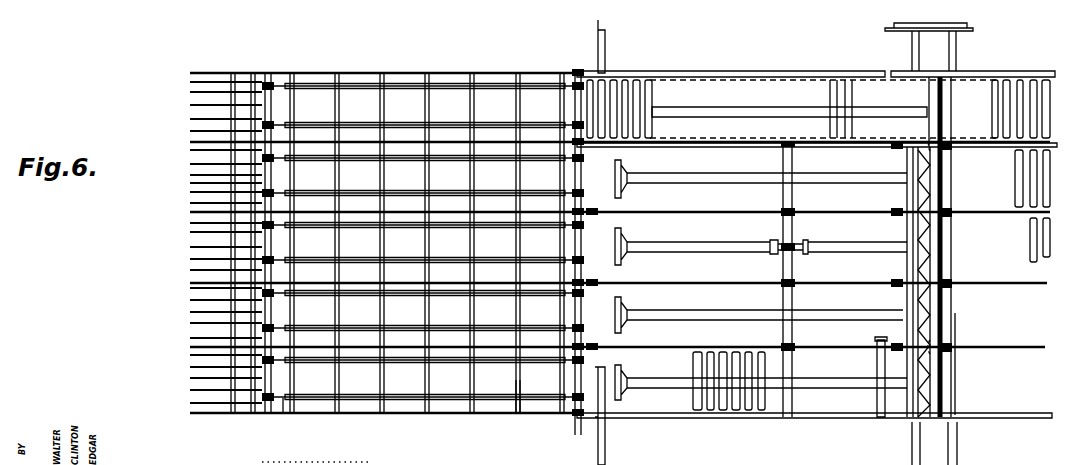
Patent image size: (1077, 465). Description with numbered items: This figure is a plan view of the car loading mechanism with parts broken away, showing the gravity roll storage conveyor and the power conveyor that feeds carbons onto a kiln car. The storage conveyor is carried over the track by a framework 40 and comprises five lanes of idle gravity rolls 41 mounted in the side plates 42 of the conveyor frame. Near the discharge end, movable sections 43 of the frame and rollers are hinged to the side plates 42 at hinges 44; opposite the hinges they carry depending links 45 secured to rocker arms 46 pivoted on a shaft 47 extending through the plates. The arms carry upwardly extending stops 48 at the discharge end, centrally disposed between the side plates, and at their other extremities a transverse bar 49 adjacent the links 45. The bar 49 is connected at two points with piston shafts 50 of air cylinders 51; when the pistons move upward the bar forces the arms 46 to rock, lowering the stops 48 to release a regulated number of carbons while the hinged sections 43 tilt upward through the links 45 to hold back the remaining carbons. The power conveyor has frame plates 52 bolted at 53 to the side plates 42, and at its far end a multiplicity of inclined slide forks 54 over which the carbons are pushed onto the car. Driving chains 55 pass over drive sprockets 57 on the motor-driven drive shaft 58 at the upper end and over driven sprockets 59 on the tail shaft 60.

The framework 40 is at (990, 440).
The gravity rolls 41 is at (762, 410).
The side plates 42 is at (850, 442).
The movable sections 43 is at (948, 212).
The hinges 44 is at (893, 420).
The depending links 45 is at (948, 283).
The rocker arms 46 is at (708, 320).
The shaft 47 is at (795, 252).
The stops 48 is at (616, 318).
The transverse bar 49 is at (952, 304).
The piston shafts 50 is at (508, 388).
The air cylinders 51 is at (982, 368).
The frame plates 52 is at (533, 412).
The bolts 53 is at (593, 73).
The slide forks 54 is at (196, 355).
The driving chains 55 is at (284, 408).
The drive sprockets 57 is at (571, 82).
The drive shaft 58 is at (585, 432).
The driven sprockets 59 is at (264, 399).
The tail shaft 60 is at (268, 84).